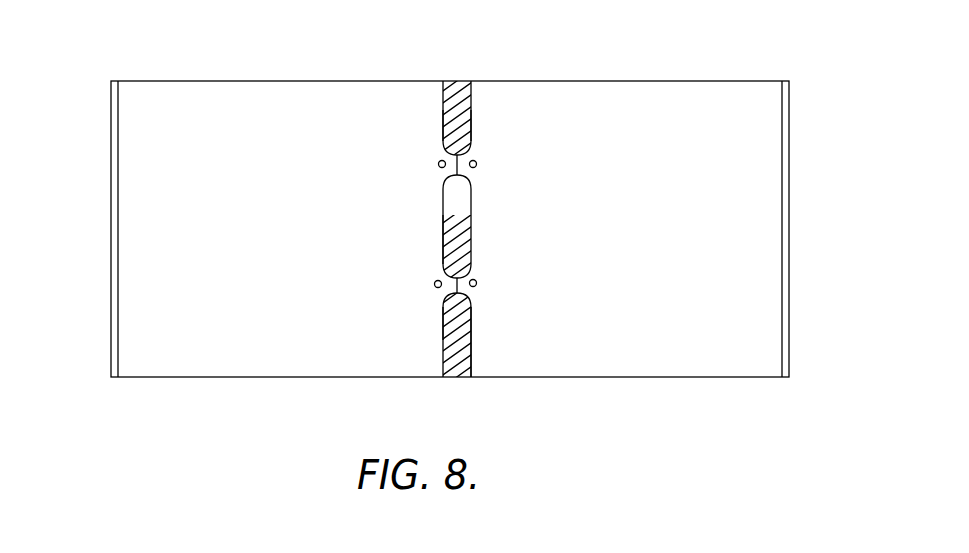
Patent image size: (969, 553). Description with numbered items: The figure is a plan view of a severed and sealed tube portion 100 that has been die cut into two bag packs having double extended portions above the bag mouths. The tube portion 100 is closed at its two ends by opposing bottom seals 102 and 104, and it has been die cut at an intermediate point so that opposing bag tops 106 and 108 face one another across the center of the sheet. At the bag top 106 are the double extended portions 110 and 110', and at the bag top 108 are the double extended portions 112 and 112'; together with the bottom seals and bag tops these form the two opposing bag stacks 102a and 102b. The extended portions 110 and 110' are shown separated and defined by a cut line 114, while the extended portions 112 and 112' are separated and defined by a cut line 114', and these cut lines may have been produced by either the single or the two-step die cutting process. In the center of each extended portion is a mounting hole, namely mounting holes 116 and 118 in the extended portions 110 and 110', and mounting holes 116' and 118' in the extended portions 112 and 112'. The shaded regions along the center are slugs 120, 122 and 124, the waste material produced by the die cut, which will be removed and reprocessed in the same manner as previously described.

The severed and sealed tube portion 100 is at (329, 68).
The bottom seal 102 is at (112, 178).
The bag stack 102a is at (270, 250).
The bag stack 102b is at (673, 250).
The bottom seal 104 is at (785, 131).
The bag top 106 is at (443, 237).
The bag top 108 is at (471, 222).
The extended portion 110 is at (452, 106).
The extended portion 110' is at (427, 340).
The extended portion 112 is at (523, 89).
The extended portion 112' is at (509, 317).
The cut line 114 is at (416, 133).
The cut line 114' is at (404, 317).
The mounting hole 116 is at (409, 175).
The mounting hole 116' is at (409, 294).
The mounting hole 118 is at (503, 148).
The mounting hole 118' is at (509, 289).
The slug 120 is at (470, 103).
The slug 122 is at (462, 202).
The slug 124 is at (472, 343).